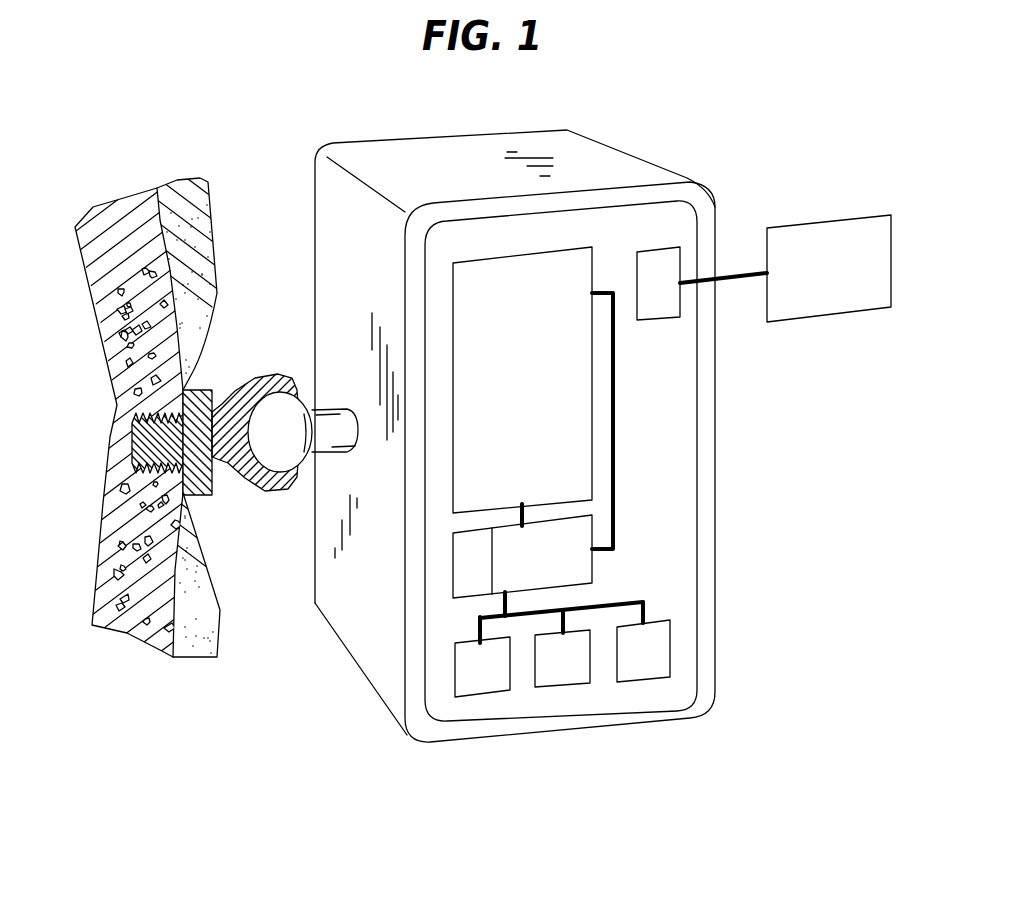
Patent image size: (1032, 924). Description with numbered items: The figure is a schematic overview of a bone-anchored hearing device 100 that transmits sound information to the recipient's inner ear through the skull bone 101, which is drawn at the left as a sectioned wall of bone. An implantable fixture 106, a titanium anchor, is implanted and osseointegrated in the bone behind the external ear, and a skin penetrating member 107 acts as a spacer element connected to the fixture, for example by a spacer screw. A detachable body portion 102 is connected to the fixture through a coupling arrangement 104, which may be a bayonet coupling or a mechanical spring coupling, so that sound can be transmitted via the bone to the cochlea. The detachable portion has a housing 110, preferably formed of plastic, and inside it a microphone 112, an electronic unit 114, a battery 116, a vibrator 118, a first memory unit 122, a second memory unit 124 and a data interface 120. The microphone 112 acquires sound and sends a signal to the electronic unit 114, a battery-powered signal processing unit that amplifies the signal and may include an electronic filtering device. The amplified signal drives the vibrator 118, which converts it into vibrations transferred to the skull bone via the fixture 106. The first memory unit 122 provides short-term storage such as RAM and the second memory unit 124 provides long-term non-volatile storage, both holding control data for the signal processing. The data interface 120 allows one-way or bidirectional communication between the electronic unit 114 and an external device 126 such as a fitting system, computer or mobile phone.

The bone-anchored hearing device 100 is at (712, 118).
The skull bone 101 is at (112, 320).
The detachable body portion 102 is at (482, 148).
The coupling arrangement 104 is at (278, 463).
The implantable fixture 106 is at (140, 448).
The skin penetrating member 107 is at (200, 485).
The housing 110 is at (410, 155).
The microphone 112 is at (482, 687).
The electronic unit 114 is at (580, 572).
The battery 116 is at (463, 572).
The vibrator 118 is at (467, 333).
The data interface 120 is at (670, 258).
The first memory unit 122 is at (563, 677).
The second memory unit 124 is at (642, 670).
The external device 126 is at (827, 233).